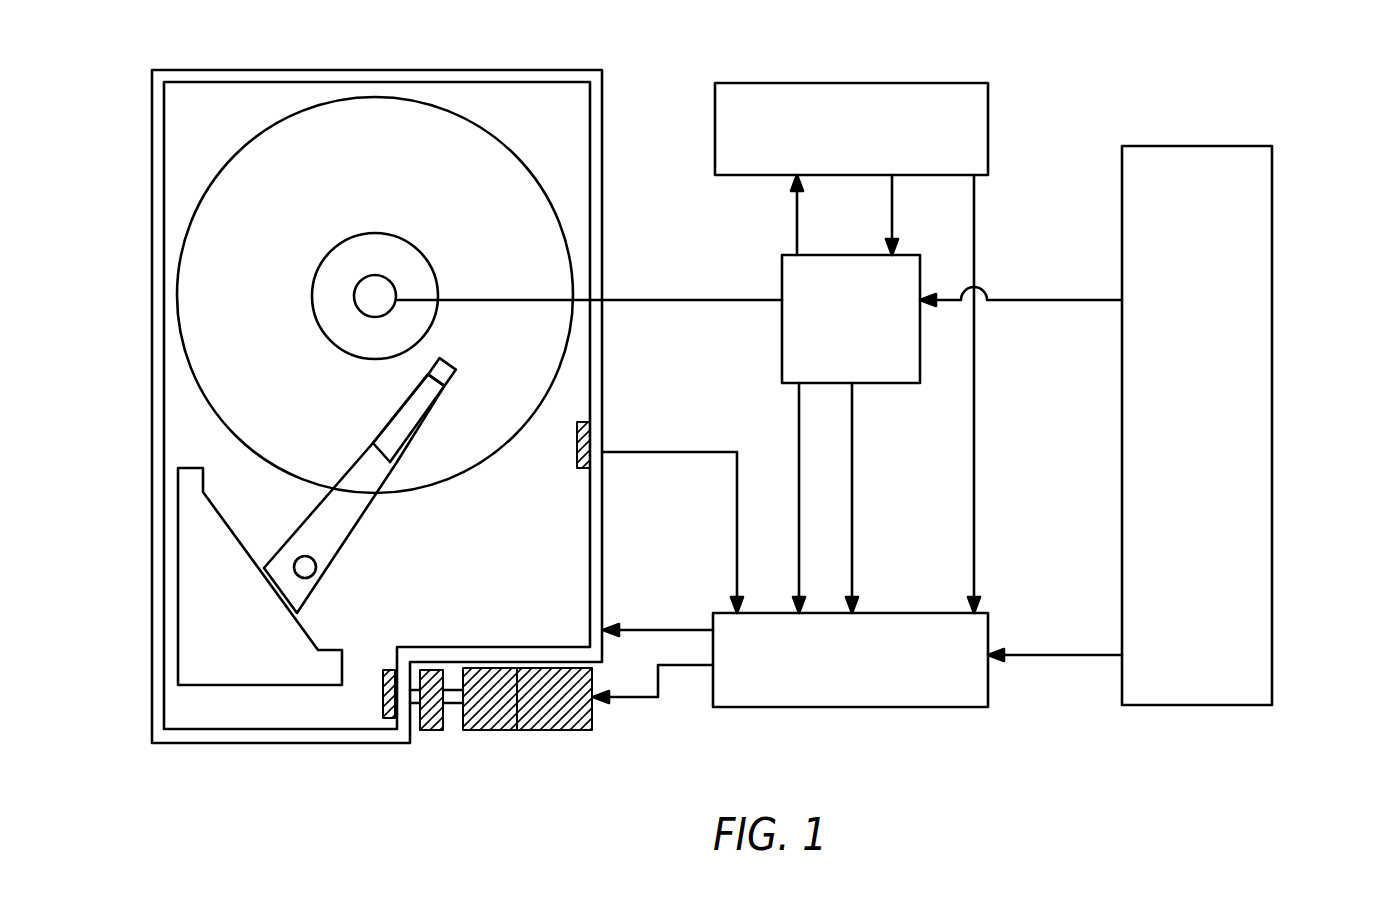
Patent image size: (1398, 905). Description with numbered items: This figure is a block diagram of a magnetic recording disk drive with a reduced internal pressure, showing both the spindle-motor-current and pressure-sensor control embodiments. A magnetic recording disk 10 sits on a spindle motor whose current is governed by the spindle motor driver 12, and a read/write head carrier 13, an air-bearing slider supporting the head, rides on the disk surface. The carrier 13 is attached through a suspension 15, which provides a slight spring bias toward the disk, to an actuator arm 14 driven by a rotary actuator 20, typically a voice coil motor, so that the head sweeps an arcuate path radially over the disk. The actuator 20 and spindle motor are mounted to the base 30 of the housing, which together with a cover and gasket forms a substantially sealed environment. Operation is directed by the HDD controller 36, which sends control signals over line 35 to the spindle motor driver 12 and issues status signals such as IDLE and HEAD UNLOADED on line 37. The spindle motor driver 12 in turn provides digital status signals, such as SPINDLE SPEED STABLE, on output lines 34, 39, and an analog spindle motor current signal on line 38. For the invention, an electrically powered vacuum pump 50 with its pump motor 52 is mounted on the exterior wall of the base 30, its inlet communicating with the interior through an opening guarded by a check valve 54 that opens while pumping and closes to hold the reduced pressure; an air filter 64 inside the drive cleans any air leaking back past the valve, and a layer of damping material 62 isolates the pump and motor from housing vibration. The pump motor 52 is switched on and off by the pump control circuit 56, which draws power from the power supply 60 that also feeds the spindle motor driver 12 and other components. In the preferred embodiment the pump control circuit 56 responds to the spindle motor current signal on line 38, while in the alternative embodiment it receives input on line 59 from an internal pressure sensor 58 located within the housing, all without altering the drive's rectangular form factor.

The magnetic recording disk 10 is at (390, 160).
The spindle motor driver 12 is at (782, 321).
The read/write head carrier 13 is at (455, 378).
The actuator arm 14 is at (330, 537).
The suspension 15 is at (403, 423).
The rotary actuator 20 is at (203, 626).
The base portion of the disk drive housing 30 is at (602, 108).
The output line 34 is at (799, 472).
The line 35 is at (892, 197).
The hard disk drive (HDD) controller 36 is at (988, 128).
The line 37 is at (974, 365).
The line 38 is at (852, 417).
The output line 39 is at (797, 217).
The vacuum pump 50 is at (500, 730).
The pump motor 52 is at (573, 730).
The check valve 54 is at (432, 730).
The pump control circuit 56 is at (988, 680).
The internal pressure sensor 58 is at (590, 440).
The line 59 is at (737, 495).
The power supply 60 is at (1272, 579).
The damping material 62 is at (605, 666).
The air filter 64 is at (385, 696).